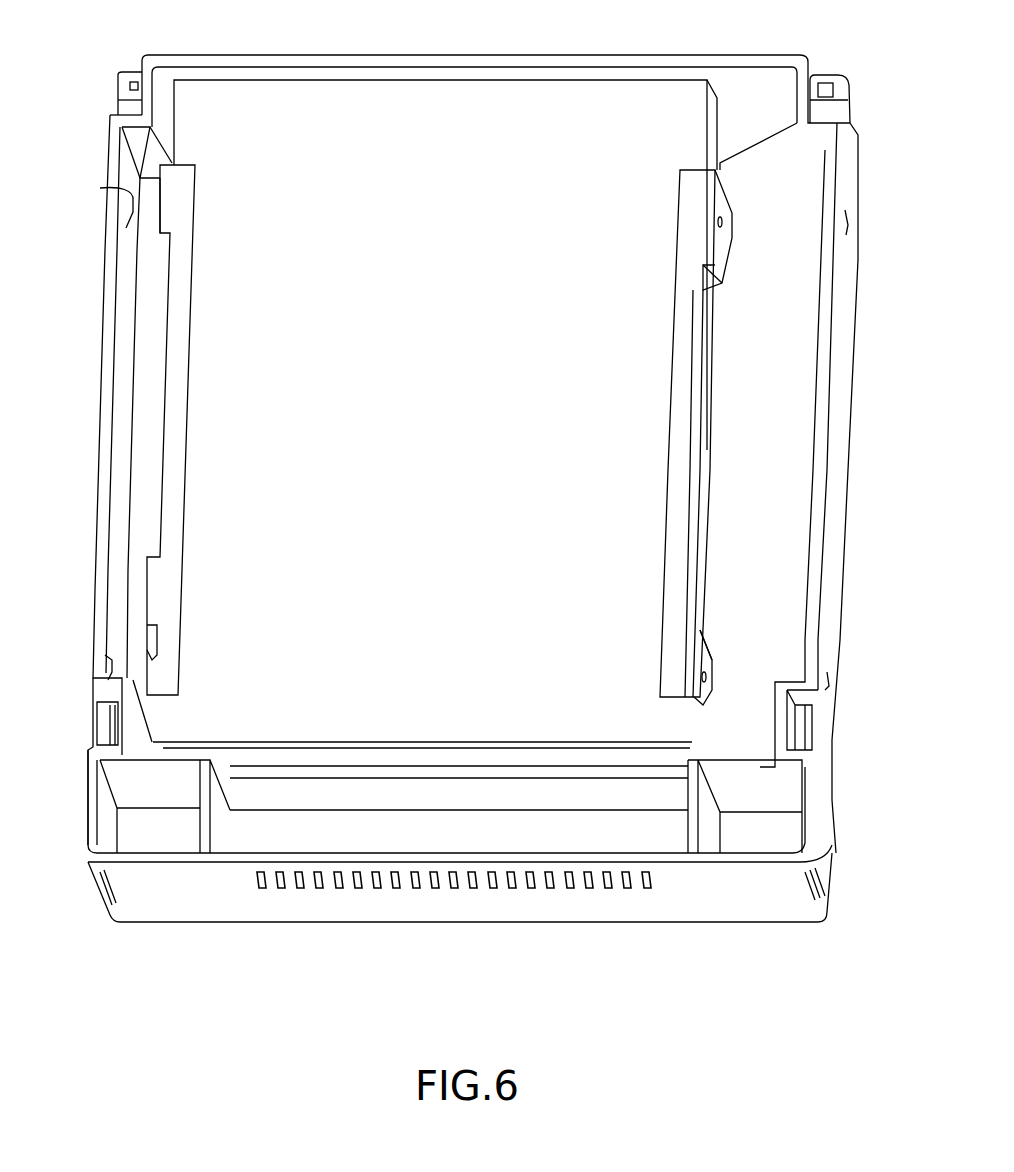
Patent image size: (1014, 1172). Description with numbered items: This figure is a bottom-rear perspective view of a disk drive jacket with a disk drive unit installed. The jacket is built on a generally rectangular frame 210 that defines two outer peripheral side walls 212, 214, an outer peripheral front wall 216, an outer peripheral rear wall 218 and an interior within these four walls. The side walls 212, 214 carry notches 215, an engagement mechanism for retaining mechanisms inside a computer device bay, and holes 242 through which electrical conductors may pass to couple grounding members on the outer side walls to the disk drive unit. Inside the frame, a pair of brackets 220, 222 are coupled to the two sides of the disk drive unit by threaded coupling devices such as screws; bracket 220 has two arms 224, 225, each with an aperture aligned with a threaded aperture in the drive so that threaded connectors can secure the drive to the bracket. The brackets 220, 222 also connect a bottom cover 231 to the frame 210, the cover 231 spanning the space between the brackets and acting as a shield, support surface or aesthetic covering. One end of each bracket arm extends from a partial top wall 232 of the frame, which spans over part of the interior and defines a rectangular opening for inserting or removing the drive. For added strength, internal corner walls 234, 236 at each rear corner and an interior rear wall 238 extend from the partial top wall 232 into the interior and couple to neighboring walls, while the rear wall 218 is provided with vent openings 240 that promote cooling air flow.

The frame 210 is at (792, 50).
The side wall 212 is at (96, 460).
The side wall 214 is at (830, 465).
The notches 215 is at (97, 720).
The front wall 216 is at (530, 52).
The rear wall 218 is at (725, 912).
The bracket 220 is at (680, 428).
The bracket 222 is at (178, 478).
The bracket arm 224 is at (724, 255).
The bracket arm 225 is at (710, 660).
The bottom cover 231 is at (476, 598).
The partial top wall 232 is at (769, 520).
The internal corner wall 234 is at (770, 800).
The internal corner wall 236 is at (235, 828).
The interior rear wall 238 is at (322, 795).
The vent openings 240 is at (596, 885).
The holes 242 is at (128, 190).